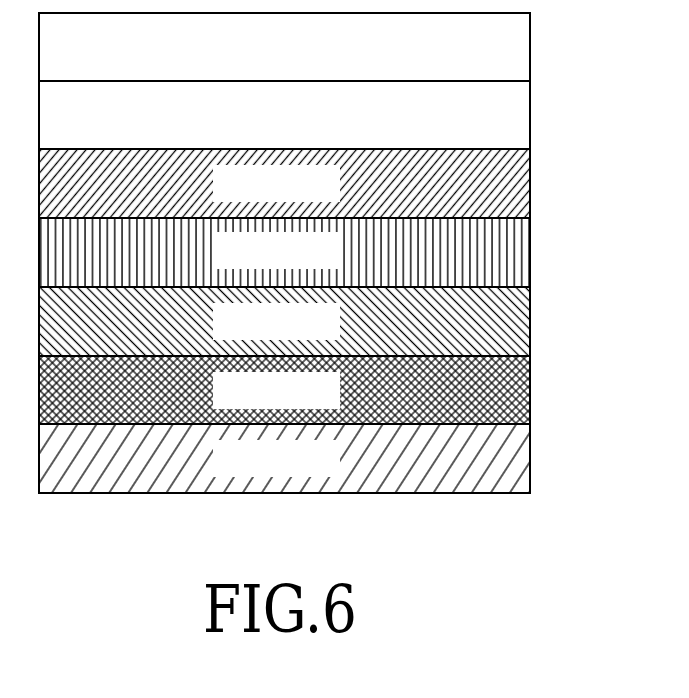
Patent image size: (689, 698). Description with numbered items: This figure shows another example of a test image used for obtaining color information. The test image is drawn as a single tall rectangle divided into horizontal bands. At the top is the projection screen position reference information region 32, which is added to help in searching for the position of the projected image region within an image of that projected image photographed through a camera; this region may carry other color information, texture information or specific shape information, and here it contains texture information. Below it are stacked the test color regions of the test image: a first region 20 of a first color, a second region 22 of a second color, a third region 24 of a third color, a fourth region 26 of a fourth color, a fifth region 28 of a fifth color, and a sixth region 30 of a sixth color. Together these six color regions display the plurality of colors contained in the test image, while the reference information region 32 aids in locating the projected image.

The projection screen position reference information region 32 is at (522, 45).
The first region 20 is at (522, 110).
The second region 22 is at (522, 181).
The third region 24 is at (522, 248).
The fourth region 26 is at (522, 317).
The fifth region 28 is at (522, 385).
The sixth region 30 is at (522, 455).